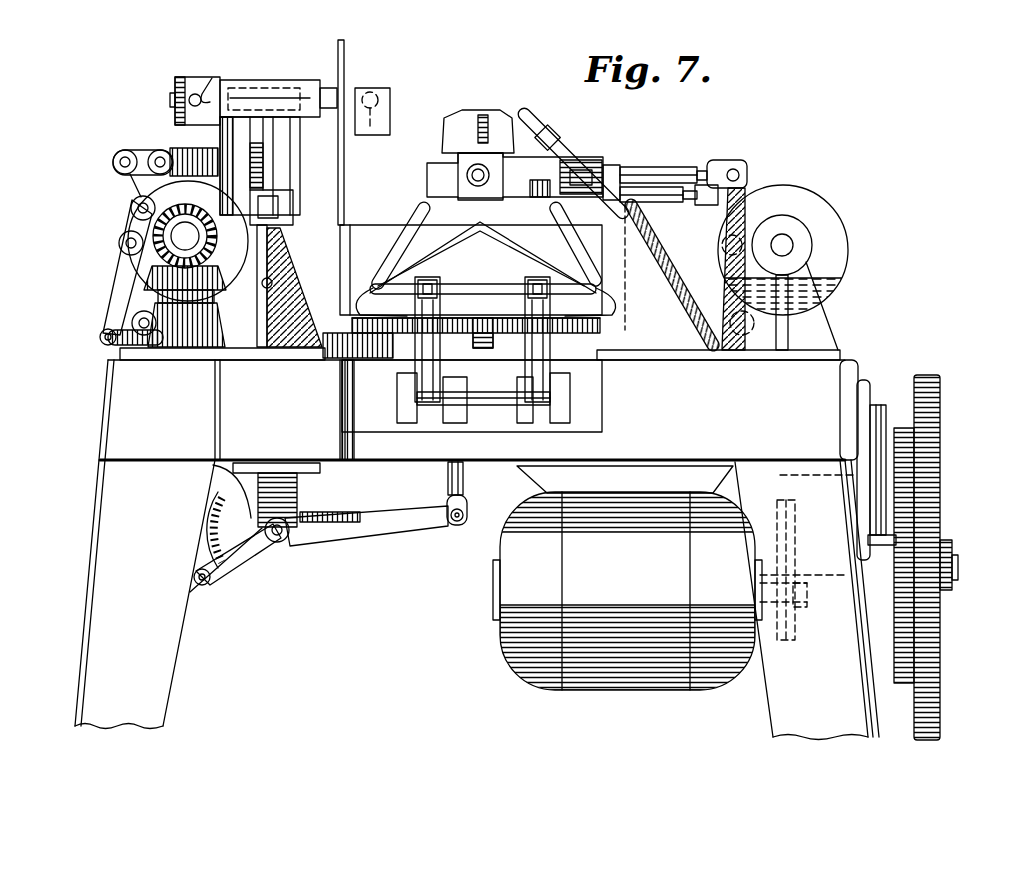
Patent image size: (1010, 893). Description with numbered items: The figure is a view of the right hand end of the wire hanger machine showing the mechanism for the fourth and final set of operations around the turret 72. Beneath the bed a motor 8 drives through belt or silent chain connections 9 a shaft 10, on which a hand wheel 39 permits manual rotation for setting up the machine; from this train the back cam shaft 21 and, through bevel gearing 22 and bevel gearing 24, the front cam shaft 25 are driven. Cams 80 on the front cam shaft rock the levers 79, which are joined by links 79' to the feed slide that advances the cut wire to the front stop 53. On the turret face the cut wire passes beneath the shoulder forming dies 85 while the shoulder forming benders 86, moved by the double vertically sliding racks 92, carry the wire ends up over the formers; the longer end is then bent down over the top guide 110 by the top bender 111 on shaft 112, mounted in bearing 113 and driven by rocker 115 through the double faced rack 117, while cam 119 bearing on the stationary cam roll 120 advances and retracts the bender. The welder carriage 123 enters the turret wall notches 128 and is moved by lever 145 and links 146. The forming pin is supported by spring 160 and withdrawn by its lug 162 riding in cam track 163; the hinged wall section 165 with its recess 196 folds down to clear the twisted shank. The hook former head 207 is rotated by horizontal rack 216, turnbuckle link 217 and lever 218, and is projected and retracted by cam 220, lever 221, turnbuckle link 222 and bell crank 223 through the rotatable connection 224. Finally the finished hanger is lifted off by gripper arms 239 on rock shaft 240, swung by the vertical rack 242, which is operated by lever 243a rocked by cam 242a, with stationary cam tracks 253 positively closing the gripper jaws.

The motor 8 is at (627, 578).
The belt or silent chain connections 9 is at (797, 624).
The shaft 10 is at (952, 560).
The horizontal cam shaft 21 is at (792, 240).
The bevel gearing 22 is at (208, 515).
The bevel gearing 24 is at (150, 258).
The horizontal cam shaft 25 is at (186, 228).
The hand wheel 39 is at (926, 375).
The front stop 53 is at (272, 283).
The turret 72 is at (383, 232).
The rock levers 79 is at (117, 314).
The links 79' is at (92, 343).
The cams 80 is at (240, 204).
The shoulder forming dies 85 is at (484, 238).
The shoulder forming benders 86 is at (380, 262).
The double vertically sliding racks 92 is at (484, 326).
The top guide 110 is at (484, 114).
The top bender 111 is at (341, 62).
The shaft 112 is at (305, 115).
The bearing 113 is at (275, 82).
The rocker 115 is at (278, 226).
The double faced rack 117 is at (264, 165).
The cam 119 is at (192, 78).
The stationary cam roll 120 is at (209, 85).
The carriage 123 is at (170, 150).
The notches 128 is at (430, 165).
The lever 145 is at (118, 193).
The links 146 is at (122, 150).
The spring 160 is at (538, 122).
The transverse lug or roll 162 is at (370, 92).
The cam track 163 is at (390, 105).
The hingedly mounted section 165 is at (462, 122).
The recess 196 is at (402, 226).
The head 207 is at (532, 150).
The horizontal rack 216 is at (530, 188).
The turnbuckle link 217 is at (652, 201).
The lever 218 is at (718, 216).
The cam 220 is at (845, 266).
The lever 221 is at (742, 222).
The turnbuckle link 222 is at (645, 168).
The bell crank 223 is at (553, 158).
The rotatable connection 224 is at (460, 173).
The gripper arms 239 is at (440, 308).
The rock shaft 240 is at (493, 395).
The vertical reciprocating rack 242 is at (465, 482).
The cam 242a is at (207, 588).
The lever 243a is at (380, 526).
The stationary cam tracks 253 is at (417, 364).